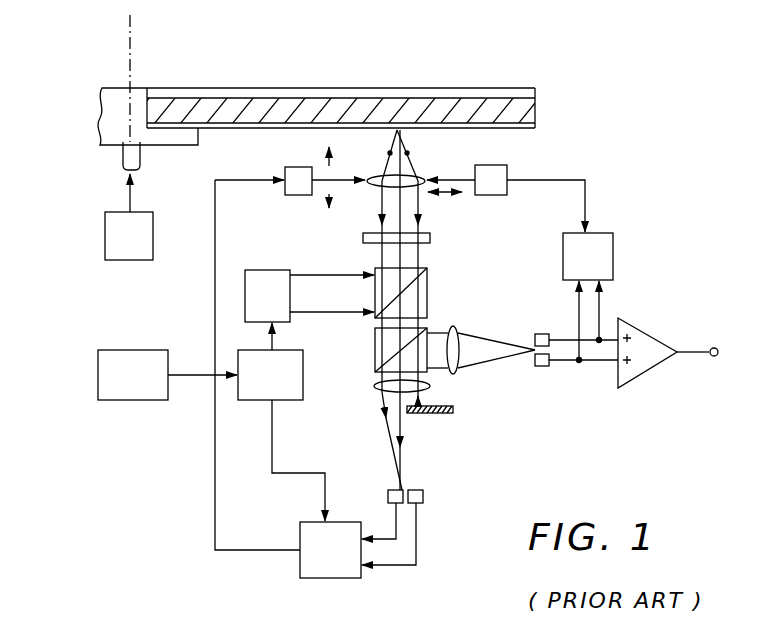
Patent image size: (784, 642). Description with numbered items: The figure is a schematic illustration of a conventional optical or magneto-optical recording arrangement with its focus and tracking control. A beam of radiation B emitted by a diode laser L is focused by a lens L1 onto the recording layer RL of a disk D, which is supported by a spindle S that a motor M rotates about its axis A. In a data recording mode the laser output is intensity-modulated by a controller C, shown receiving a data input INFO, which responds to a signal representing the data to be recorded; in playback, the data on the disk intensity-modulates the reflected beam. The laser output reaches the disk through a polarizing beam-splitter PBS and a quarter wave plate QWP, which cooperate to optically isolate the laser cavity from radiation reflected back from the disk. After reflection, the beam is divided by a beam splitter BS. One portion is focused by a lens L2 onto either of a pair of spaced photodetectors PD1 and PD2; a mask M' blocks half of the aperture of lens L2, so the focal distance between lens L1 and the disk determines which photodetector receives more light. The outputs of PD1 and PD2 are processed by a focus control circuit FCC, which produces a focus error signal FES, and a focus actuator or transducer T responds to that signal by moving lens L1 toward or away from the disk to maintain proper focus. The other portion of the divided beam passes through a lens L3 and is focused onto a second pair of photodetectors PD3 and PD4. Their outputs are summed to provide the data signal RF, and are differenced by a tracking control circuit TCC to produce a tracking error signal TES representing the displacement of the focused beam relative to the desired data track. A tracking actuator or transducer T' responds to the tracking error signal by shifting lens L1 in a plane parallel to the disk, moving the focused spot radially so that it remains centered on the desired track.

The axis A is at (133, 37).
The optical or magneto-optical disk D is at (344, 87).
The recording layer RL is at (531, 88).
The spindle S is at (97, 122).
The motor M is at (129, 217).
The focus actuator or transducer T is at (290, 177).
The tracking actuator or transducer T' is at (467, 180).
The beam of radiation B is at (405, 140).
The lens L1 is at (423, 178).
The quarter wave plate QWP is at (431, 241).
The polarizing beam-splitter PBS is at (430, 300).
The diode laser L is at (309, 296).
The controller C is at (281, 422).
The information signal source INFO is at (167, 375).
The beam splitter BS is at (375, 352).
The lens L2 is at (378, 390).
The lens L3 is at (455, 374).
The mask M' is at (450, 424).
The photodetector PD1 is at (388, 493).
The photodetector PD2 is at (421, 492).
The photodetector PD3 is at (537, 366).
The photodetector PD4 is at (535, 339).
The tracking control circuit TCC is at (588, 256).
The tracking error signal TES is at (586, 212).
The focus control circuit FCC is at (330, 550).
The focus error signal FES is at (257, 552).
The data signal RF is at (672, 351).